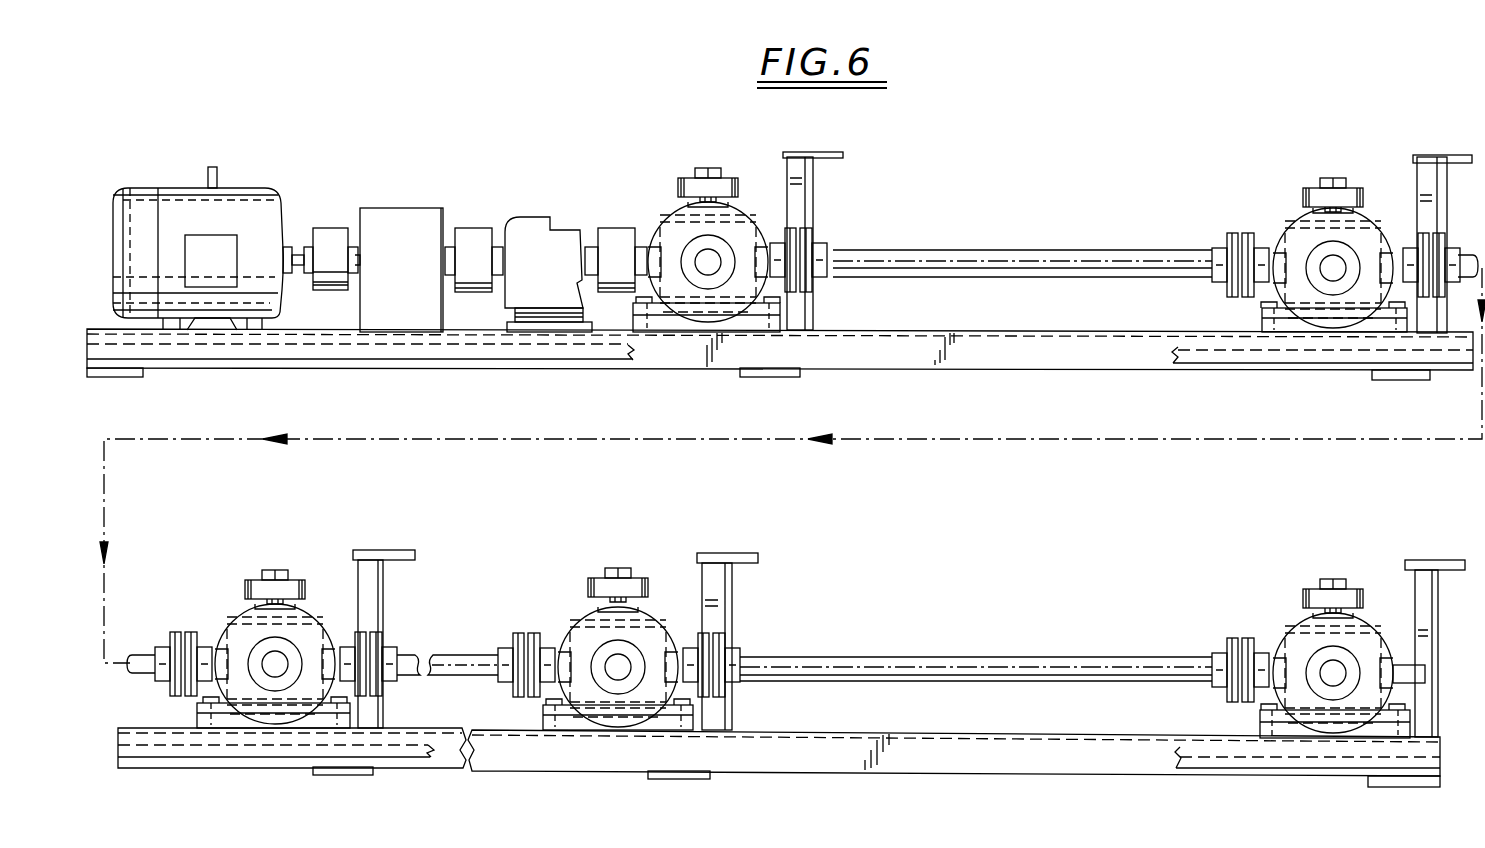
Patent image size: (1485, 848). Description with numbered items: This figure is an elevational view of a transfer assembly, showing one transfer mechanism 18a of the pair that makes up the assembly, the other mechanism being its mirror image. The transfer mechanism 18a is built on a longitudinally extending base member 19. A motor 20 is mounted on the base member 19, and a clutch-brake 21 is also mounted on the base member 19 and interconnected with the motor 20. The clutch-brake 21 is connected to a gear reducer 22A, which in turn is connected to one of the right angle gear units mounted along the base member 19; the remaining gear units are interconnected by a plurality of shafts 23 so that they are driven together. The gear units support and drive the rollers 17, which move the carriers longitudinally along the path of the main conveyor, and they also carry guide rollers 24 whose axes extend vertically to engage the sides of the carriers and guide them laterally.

The roller 17 is at (735, 237).
The transfer mechanism 18a is at (927, 343).
The base member 19 is at (1068, 357).
The motor 20 is at (252, 198).
The clutch-brake 21 is at (410, 220).
The gear reducer 22A is at (532, 228).
The shaft 23 is at (1075, 258).
The guide roller 24 is at (680, 188).